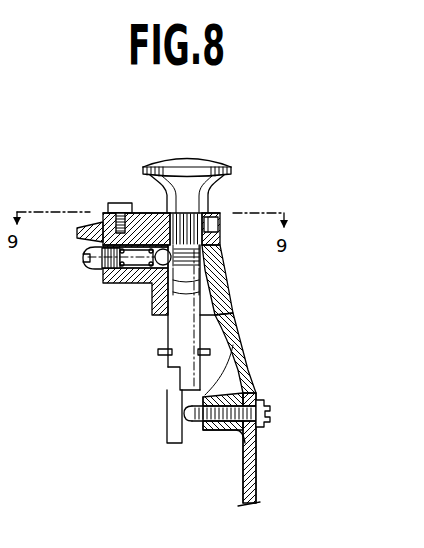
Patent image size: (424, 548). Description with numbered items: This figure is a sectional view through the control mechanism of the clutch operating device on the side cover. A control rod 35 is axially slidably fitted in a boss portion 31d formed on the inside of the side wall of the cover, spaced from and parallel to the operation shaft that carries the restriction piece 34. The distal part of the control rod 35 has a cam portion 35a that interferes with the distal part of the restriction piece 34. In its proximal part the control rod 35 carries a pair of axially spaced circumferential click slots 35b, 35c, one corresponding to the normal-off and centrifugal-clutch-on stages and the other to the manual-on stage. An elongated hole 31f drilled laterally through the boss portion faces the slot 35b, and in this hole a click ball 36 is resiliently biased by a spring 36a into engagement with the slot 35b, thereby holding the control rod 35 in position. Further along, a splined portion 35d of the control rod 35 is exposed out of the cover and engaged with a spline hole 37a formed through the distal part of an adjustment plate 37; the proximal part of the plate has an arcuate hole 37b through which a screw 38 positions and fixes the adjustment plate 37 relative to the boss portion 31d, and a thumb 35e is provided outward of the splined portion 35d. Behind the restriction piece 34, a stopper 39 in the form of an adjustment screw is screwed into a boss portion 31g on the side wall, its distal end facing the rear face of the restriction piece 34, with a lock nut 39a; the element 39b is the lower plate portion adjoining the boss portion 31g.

The boss portion 31d is at (125, 279).
The elongated hole 31f is at (103, 281).
The boss portion 31g is at (235, 431).
The restriction piece 34 is at (170, 445).
The control rod 35 is at (198, 313).
The cam portion 35a is at (180, 377).
The click slot 35b is at (204, 262).
The click slot 35c is at (172, 321).
The splined portion 35d is at (222, 223).
The thumb 35e is at (186, 160).
The click ball 36 is at (158, 278).
The spring 36a is at (86, 250).
The adjustment plate 37 is at (141, 211).
The spline hole 37a is at (197, 207).
The arcuate hole 37b is at (78, 229).
The screw 38 is at (118, 203).
The stopper 39 is at (268, 403).
The lock nut 39a is at (183, 392).
The plate 39b is at (258, 445).